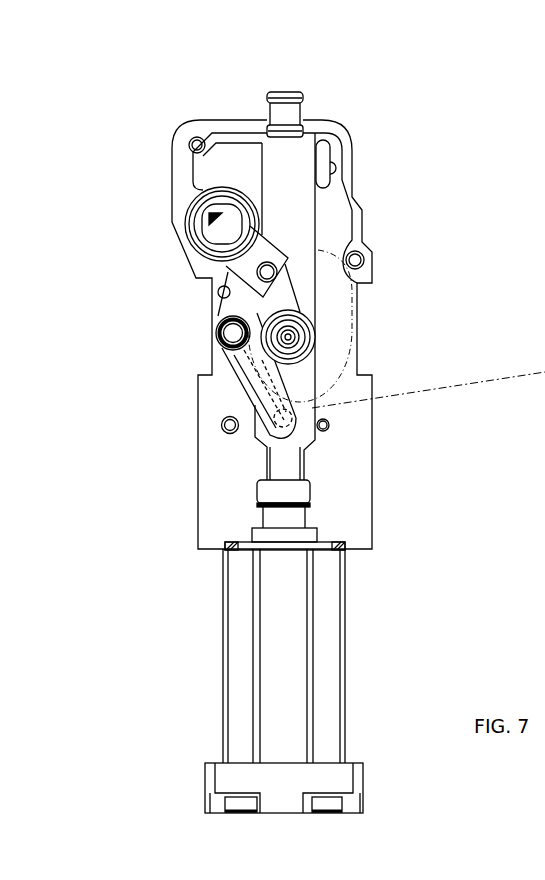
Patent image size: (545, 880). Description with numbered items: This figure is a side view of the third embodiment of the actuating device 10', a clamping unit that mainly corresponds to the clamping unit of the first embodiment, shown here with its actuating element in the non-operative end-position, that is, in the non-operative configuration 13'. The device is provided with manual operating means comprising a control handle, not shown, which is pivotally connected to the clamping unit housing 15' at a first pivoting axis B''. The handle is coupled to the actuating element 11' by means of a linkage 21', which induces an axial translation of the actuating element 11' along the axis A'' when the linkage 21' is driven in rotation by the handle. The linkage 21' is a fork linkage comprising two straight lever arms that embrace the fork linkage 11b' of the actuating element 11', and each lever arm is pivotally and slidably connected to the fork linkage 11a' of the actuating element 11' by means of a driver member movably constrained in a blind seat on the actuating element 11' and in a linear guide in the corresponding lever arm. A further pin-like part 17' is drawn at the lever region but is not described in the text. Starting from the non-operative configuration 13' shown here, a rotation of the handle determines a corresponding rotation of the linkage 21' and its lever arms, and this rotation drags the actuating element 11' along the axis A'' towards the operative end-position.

The actuating device 10' is at (360, 681).
The actuating element 11' is at (396, 389).
The fork linkage of the actuating element 11a' is at (345, 476).
The fork linkage of the actuating element 11b' is at (348, 375).
The non-operative configuration 13' is at (230, 532).
The clamping unit housing 15' is at (329, 320).
The pivot pin 17' is at (352, 327).
The linkage 21' is at (222, 332).
The axis A'' is at (266, 452).
The first pivoting axis B'' is at (178, 331).